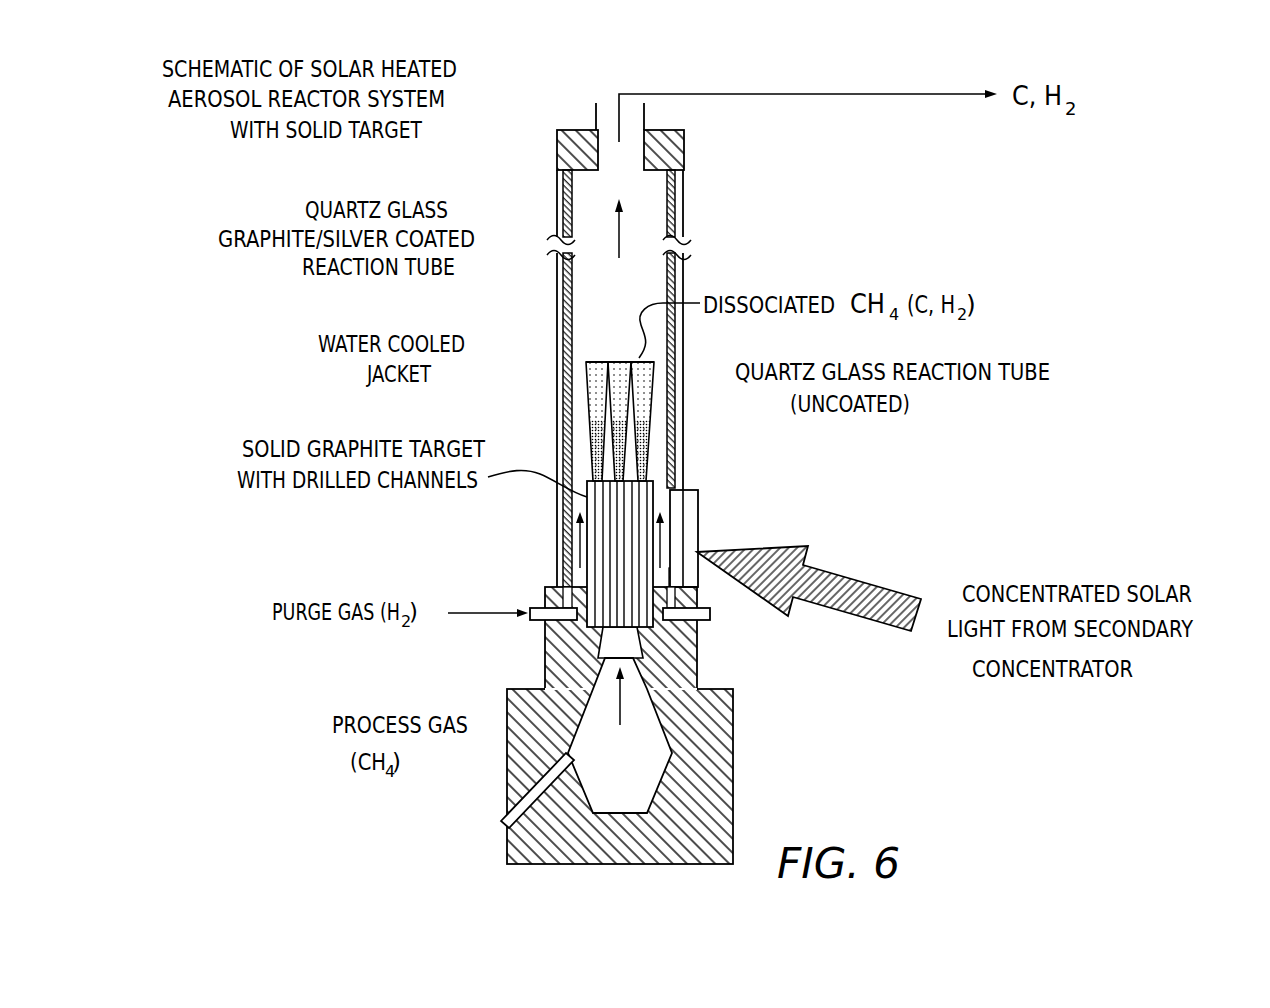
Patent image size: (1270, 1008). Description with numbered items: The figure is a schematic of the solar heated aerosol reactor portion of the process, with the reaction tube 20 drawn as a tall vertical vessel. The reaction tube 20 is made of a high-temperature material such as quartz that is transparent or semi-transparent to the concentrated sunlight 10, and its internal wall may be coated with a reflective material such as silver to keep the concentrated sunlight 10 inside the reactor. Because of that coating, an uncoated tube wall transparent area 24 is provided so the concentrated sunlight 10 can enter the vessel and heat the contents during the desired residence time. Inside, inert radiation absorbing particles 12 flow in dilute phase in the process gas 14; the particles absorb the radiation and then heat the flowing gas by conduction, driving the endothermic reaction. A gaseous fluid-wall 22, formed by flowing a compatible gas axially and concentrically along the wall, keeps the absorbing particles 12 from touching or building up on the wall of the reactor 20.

The concentrated sunlight 10 is at (915, 622).
The inert radiation absorbing particles 12 is at (620, 707).
The process gas 14 is at (492, 834).
The reaction tube 20 is at (563, 305).
The gaseous fluid-wall 22 is at (556, 410).
The tube wall transparent area 24 is at (698, 525).